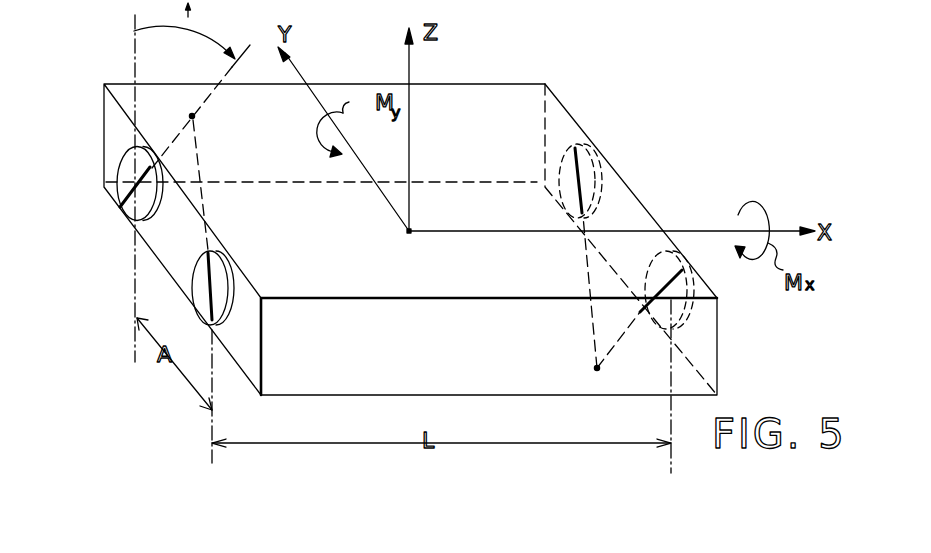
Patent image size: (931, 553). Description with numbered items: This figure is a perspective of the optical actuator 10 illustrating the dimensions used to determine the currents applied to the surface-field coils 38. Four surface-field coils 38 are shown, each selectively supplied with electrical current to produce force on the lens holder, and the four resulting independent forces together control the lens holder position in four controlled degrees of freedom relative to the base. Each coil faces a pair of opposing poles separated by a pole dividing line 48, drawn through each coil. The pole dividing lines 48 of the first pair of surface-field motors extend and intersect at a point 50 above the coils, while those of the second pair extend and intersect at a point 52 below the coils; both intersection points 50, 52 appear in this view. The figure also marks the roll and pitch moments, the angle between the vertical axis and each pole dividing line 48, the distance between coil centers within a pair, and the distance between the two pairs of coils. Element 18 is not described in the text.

The optical actuator 10 is at (808, 380).
The pendulum element 18 is at (583, 187).
The surface-field coil 38 is at (117, 161).
The pole dividing line 48 is at (121, 208).
The intersection point 50 is at (195, 117).
The intersection point 52 is at (596, 368).